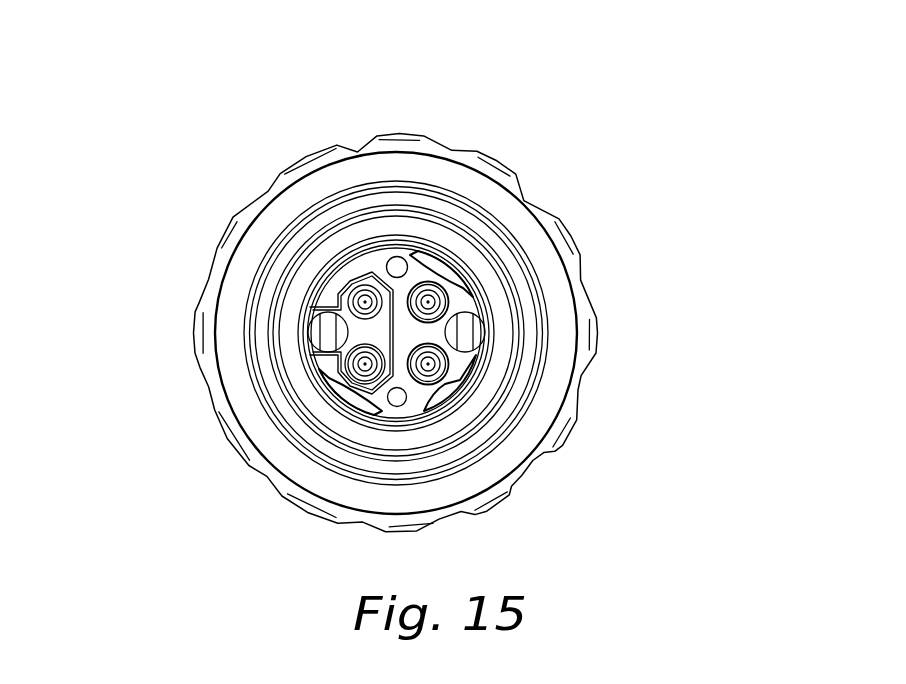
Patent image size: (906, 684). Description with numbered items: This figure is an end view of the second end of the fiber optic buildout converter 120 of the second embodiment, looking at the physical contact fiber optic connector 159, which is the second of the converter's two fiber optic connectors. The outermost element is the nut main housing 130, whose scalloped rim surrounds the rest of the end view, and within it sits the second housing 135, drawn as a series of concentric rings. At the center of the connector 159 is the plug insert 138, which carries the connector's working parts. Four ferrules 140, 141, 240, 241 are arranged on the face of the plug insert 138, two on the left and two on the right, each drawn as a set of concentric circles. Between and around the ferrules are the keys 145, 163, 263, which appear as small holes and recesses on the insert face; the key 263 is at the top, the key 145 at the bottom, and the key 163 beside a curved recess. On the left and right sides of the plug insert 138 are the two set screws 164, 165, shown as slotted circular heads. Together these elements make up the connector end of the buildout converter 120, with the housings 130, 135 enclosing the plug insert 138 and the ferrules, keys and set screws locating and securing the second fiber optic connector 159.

The fiber optic buildout converter 120 is at (668, 121).
The nut main housing 130 is at (568, 232).
The second housing 135 is at (288, 252).
The plug insert 138 is at (375, 380).
The ferrule 140 is at (453, 367).
The ferrule 141 is at (357, 362).
The key 145 is at (398, 406).
The second fiber optic connector 159 is at (440, 363).
The key 163 is at (412, 410).
The set screw 164 is at (313, 334).
The set screw 165 is at (480, 335).
The ferrule 240 is at (362, 285).
The ferrule 241 is at (447, 302).
The key 263 is at (413, 270).